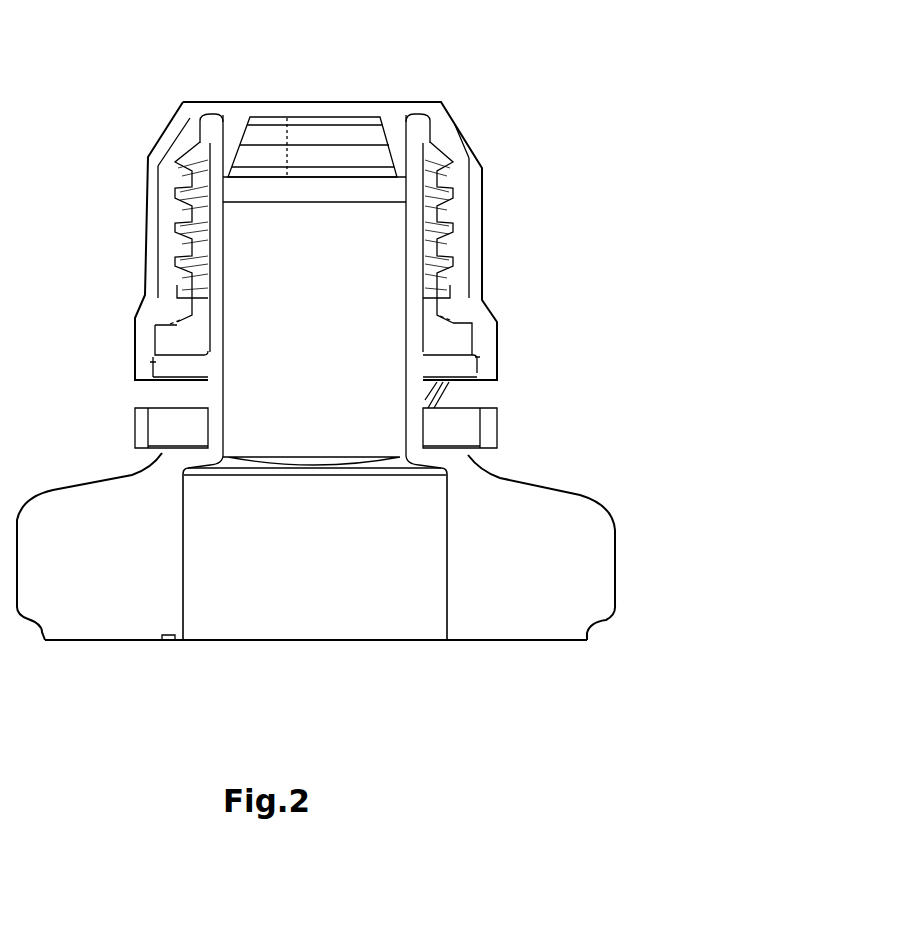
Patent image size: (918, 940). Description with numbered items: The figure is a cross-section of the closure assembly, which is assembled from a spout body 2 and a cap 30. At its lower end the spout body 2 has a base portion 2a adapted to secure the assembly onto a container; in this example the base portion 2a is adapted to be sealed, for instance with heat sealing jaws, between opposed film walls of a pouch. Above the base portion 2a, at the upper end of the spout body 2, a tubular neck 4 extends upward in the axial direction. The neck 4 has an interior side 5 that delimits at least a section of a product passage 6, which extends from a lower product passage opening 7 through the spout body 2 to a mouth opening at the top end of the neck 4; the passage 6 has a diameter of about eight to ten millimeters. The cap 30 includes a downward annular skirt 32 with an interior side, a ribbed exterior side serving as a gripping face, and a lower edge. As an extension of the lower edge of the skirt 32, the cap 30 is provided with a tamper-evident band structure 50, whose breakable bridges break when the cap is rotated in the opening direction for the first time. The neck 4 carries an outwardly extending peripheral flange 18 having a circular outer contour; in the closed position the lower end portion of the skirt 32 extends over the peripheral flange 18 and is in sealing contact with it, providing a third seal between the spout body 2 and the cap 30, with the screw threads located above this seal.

The spout body 2 is at (99, 617).
The base portion 2a is at (604, 474).
The tubular neck 4 is at (212, 322).
The interior side 5 is at (245, 412).
The product passage 6 is at (350, 385).
The lower product passage opening 7 is at (325, 662).
The peripheral flange 18 is at (448, 365).
The cap 30 is at (501, 107).
The annular skirt 32 is at (466, 310).
The tamper-evident band structure 50 is at (536, 437).